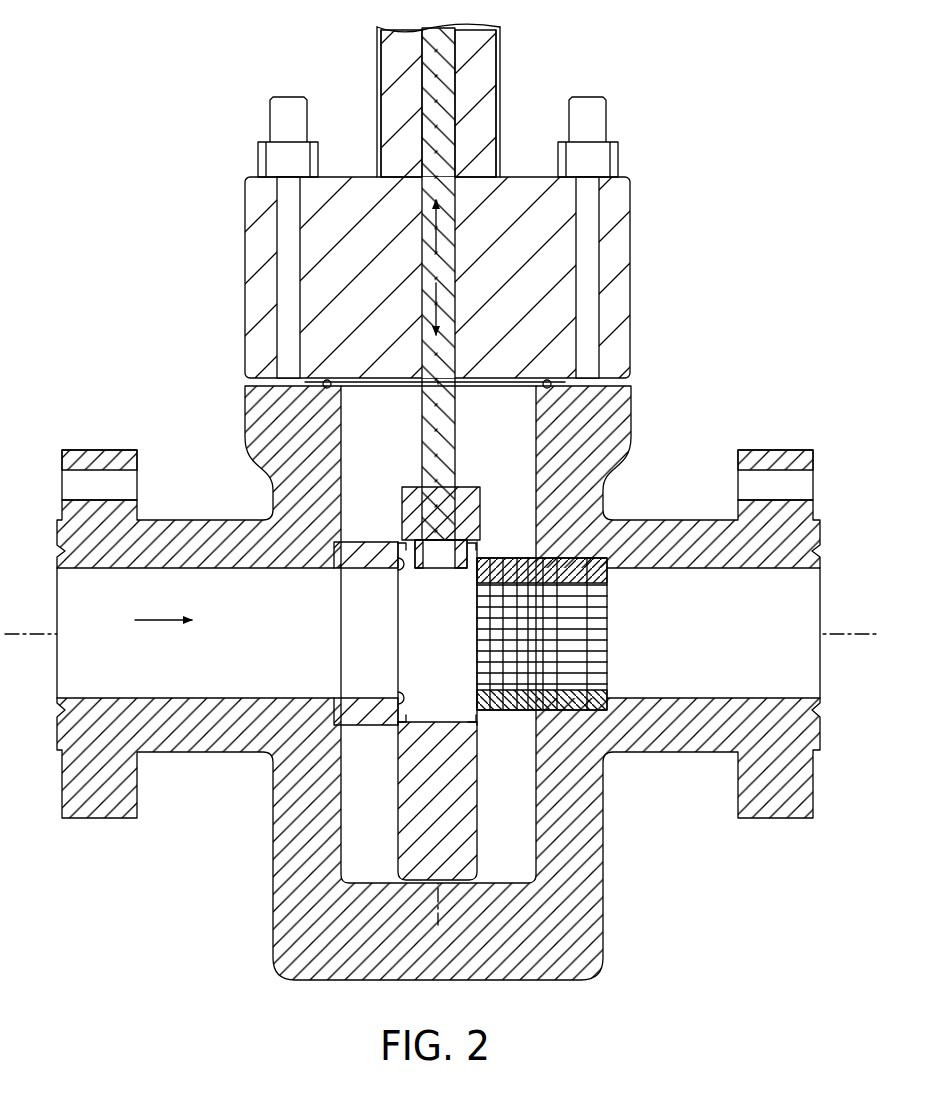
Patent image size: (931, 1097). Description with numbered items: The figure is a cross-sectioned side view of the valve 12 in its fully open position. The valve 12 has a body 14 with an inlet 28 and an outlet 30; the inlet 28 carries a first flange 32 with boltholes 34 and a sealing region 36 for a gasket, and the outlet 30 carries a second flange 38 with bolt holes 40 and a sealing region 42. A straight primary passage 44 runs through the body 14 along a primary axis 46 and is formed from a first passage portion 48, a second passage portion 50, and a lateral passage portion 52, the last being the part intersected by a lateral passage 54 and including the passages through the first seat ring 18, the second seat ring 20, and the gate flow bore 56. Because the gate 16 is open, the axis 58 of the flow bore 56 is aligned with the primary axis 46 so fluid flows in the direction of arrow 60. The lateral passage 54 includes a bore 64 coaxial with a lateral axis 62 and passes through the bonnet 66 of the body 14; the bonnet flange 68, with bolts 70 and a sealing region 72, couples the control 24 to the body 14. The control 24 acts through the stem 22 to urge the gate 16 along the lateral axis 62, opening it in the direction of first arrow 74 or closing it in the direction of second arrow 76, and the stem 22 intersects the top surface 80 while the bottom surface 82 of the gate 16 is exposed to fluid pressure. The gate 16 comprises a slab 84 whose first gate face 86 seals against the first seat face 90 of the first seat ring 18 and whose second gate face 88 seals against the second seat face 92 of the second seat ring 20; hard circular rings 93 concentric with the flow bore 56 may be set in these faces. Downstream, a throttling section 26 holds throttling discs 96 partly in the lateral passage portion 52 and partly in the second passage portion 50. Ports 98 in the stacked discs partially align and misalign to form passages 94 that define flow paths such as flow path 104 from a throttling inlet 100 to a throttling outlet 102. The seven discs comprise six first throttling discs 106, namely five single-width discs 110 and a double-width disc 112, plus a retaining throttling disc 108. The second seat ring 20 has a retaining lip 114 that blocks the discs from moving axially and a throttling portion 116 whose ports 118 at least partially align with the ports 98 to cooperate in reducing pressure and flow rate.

The valve 12 is at (768, 214).
The body 14 is at (655, 508).
The gate 16 is at (595, 645).
The first seat ring 18 is at (422, 676).
The second seat ring 20 is at (528, 552).
The stem 22 is at (479, 294).
The control 24 is at (500, 100).
The throttling section 26 is at (555, 553).
The inlet 28 is at (55, 610).
The outlet 30 is at (822, 610).
The first flange 32 is at (95, 445).
The boltholes 34 is at (118, 455).
The sealing region 36 is at (57, 548).
The second flange 38 is at (785, 445).
The bolt holes 40 is at (760, 448).
The sealing region 42 is at (820, 548).
The primary passage 44 is at (185, 575).
The primary axis 46 is at (122, 635).
The first passage portion 48 is at (195, 690).
The second passage portion 50 is at (727, 695).
The lateral passage portion 52 is at (330, 672).
The lateral passage 54 is at (352, 432).
The gate flow bore 56 is at (470, 700).
The axis 58 is at (426, 635).
The arrow 60 is at (160, 620).
The lateral axis 62 is at (438, 908).
The bore 64 is at (340, 397).
The bonnet 66 is at (631, 412).
The bonnet flange 68 is at (632, 392).
The bolts 70 is at (603, 240).
The sealing region 72 is at (610, 325).
The first arrow 74 is at (436, 300).
The second arrow 76 is at (436, 235).
The top surface 80 is at (468, 505).
The bottom surface 82 is at (450, 883).
The slab 84 is at (405, 812).
The first gate face 86 is at (400, 733).
The second gate face 88 is at (478, 825).
The first seat face 90 is at (400, 565).
The second seat face 92 is at (462, 520).
The circular ring 93 is at (458, 530).
The passages 94 is at (608, 598).
The throttling discs 96 is at (610, 550).
The ports 98 is at (608, 612).
The throttling inlet 100 is at (487, 612).
The throttling outlet 102 is at (610, 655).
The flow path 104 is at (632, 628).
The first throttling discs 106 is at (545, 712).
The retaining throttling disc 108 is at (580, 712).
The single-width discs 110 is at (492, 634).
The double-width disc 112 is at (558, 634).
The retaining lip 114 is at (432, 580).
The throttling portion 116 is at (478, 655).
The ports 118 is at (470, 668).